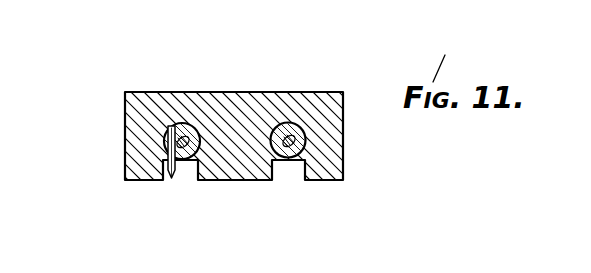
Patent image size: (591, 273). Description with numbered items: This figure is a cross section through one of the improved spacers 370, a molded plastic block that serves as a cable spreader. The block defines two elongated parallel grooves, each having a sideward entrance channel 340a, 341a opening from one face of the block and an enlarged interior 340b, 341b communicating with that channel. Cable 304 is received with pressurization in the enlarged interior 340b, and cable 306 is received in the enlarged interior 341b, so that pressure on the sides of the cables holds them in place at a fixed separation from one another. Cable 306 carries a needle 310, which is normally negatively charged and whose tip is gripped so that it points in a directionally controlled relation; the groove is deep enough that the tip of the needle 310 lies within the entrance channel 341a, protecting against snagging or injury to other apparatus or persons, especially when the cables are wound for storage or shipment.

The spacer 370 is at (218, 92).
The enlarged interior 341b is at (172, 124).
The enlarged interior 340b is at (289, 125).
The sideward entrance channel 341a is at (193, 174).
The cable 306 is at (168, 140).
The needle 310 is at (162, 168).
The cable 304 is at (305, 136).
The sideward entrance channel 340a is at (286, 163).